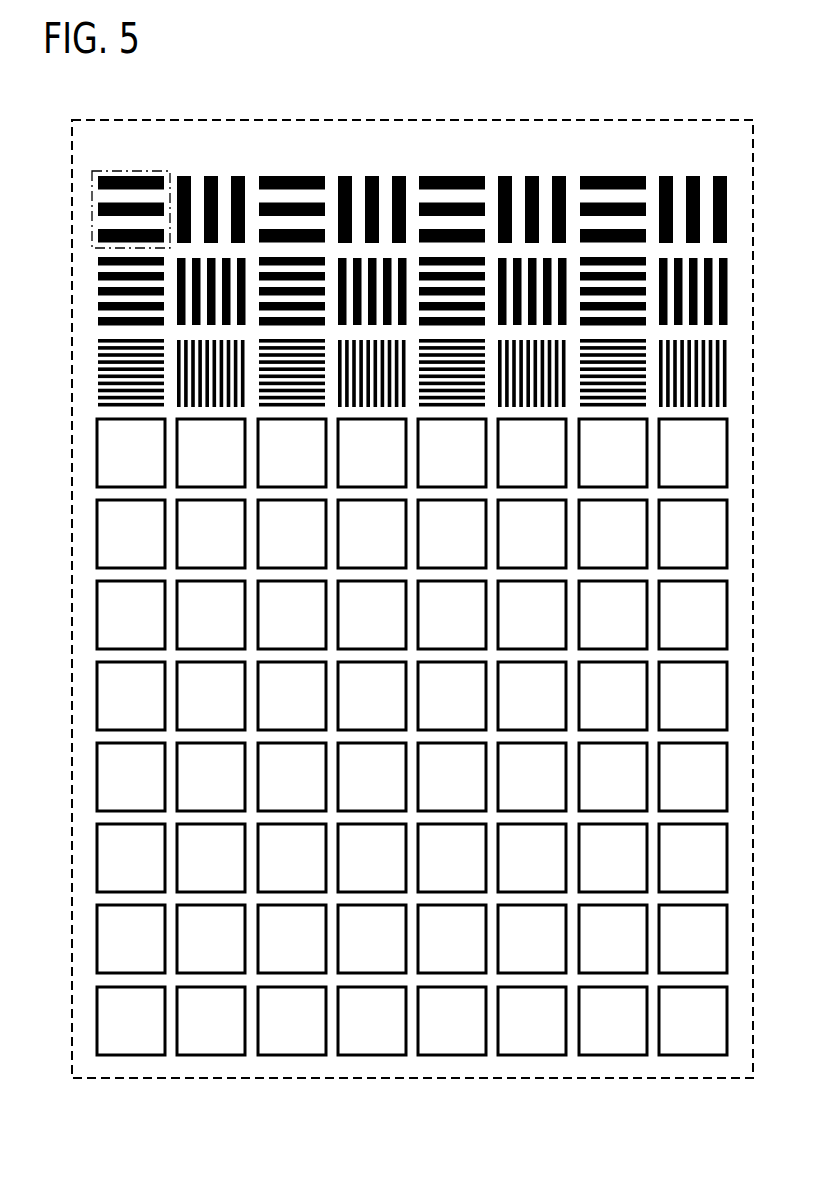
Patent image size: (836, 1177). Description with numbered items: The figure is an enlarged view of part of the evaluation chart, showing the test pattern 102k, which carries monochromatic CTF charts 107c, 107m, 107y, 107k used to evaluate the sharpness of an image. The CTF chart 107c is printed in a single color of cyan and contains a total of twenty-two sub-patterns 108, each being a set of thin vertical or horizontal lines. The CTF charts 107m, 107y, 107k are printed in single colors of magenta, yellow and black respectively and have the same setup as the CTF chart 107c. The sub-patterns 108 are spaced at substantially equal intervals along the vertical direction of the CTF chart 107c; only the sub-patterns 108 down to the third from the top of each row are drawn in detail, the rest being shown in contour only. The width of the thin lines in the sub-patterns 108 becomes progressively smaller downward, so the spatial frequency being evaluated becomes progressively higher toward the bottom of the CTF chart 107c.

The test pattern 102k is at (372, 120).
The sub-pattern 108 is at (118, 171).
The CTF chart 107c is at (245, 1082).
The CTF chart 107m is at (406, 1082).
The CTF chart 107y is at (566, 1082).
The CTF chart 107k is at (727, 1082).